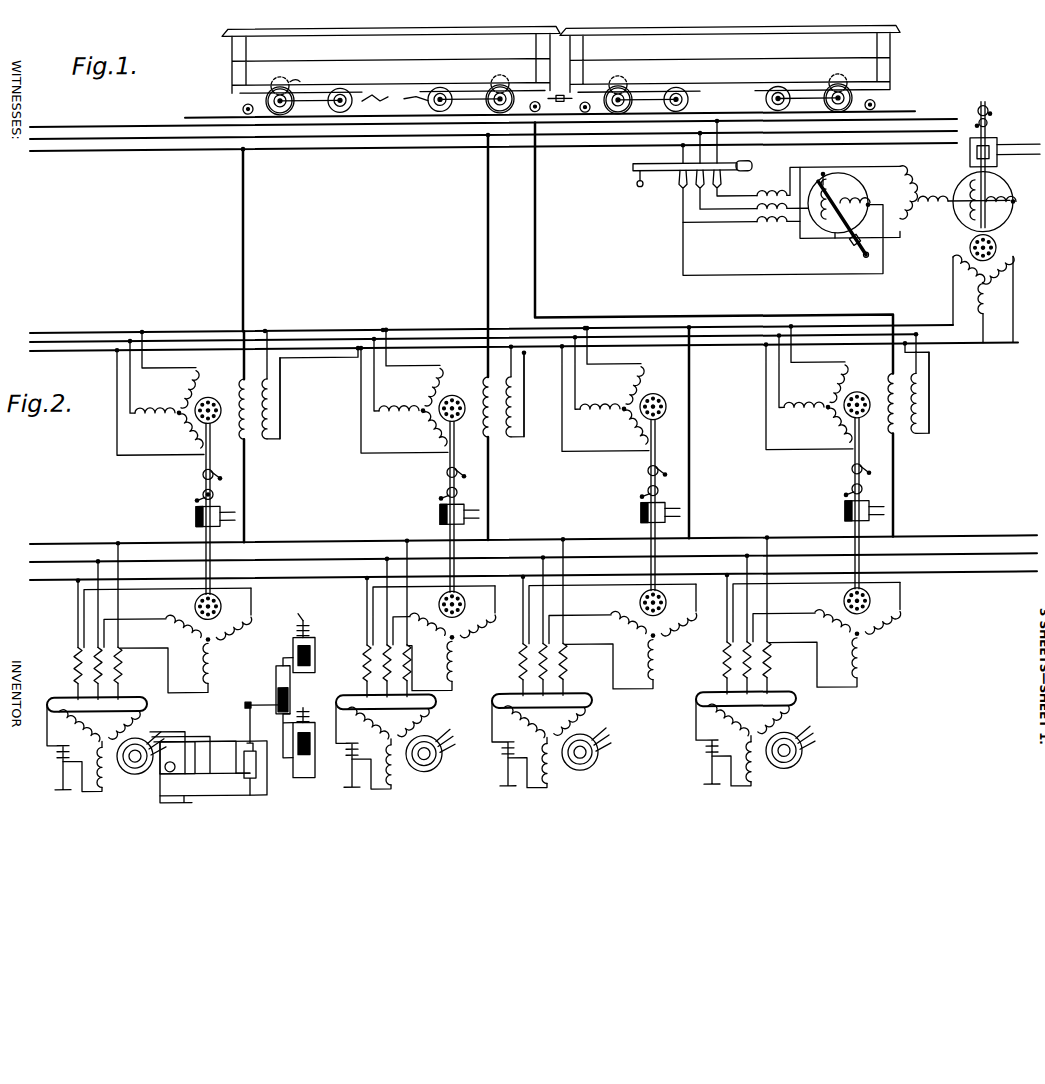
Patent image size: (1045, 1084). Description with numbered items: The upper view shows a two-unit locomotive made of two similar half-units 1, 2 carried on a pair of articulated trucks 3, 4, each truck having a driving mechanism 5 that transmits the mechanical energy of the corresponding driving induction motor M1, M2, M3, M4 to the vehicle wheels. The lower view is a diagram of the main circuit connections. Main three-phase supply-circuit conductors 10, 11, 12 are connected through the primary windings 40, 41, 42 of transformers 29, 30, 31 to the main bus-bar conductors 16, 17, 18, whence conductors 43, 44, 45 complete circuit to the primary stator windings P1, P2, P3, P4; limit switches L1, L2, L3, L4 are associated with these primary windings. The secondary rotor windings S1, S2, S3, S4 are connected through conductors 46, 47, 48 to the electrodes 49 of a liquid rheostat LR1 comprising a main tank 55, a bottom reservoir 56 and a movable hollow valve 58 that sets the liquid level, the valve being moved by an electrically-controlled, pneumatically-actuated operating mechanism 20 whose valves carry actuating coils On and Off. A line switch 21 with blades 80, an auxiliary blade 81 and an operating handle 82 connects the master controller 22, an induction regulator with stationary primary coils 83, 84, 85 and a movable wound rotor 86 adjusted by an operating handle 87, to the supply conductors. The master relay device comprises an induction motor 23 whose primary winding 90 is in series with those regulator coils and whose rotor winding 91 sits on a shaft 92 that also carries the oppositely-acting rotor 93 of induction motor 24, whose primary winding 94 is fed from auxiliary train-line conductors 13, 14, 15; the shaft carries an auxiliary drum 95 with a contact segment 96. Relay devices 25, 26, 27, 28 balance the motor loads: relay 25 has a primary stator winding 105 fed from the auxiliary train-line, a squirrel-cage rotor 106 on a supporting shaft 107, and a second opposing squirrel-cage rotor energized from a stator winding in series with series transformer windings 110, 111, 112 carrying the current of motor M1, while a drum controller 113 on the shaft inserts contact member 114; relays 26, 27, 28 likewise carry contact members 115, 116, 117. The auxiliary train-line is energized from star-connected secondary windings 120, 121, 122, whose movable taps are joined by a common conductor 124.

In FIG. 1, the half-unit 1 is at (391, 70).
In FIG. 1, the half-unit 2 is at (730, 68).
In FIG. 1, the articulated truck 3 is at (375, 105).
In FIG. 1, the articulated truck 4 is at (410, 104).
In FIG. 1, the driving mechanism 5 is at (300, 84).
In FIG. 1, the driving induction motor M1 is at (282, 79).
In FIG. 2, the driving induction motor M1 is at (96, 772).
In FIG. 1, the driving induction motor M2 is at (500, 79).
In FIG. 2, the driving induction motor M2 is at (385, 770).
In FIG. 1, the driving induction motor M3 is at (618, 81).
In FIG. 2, the driving induction motor M3 is at (541, 768).
In FIG. 1, the driving induction motor M4 is at (838, 81).
In FIG. 2, the driving induction motor M4 is at (745, 766).
In FIG. 2, the main three-phase supply-circuit conductor 10 is at (97, 128).
In FIG. 2, the main three-phase supply-circuit conductor 11 is at (124, 141).
In FIG. 2, the main three-phase supply-circuit conductor 12 is at (160, 151).
In FIG. 2, the auxiliary train-line conductor 13 is at (45, 333).
In FIG. 2, the auxiliary train-line conductor 14 is at (72, 342).
In FIG. 2, the auxiliary train-line conductor 15 is at (96, 351).
In FIG. 2, the main bus-bar conductor 16 is at (48, 544).
In FIG. 2, the main bus-bar conductor 17 is at (73, 562).
In FIG. 2, the main bus-bar conductor 18 is at (97, 580).
In FIG. 2, the operating mechanism 20 is at (296, 698).
In FIG. 2, the line switch 21 is at (648, 165).
In FIG. 2, the master controller 22 is at (860, 241).
In FIG. 2, the induction motor 23 is at (972, 190).
In FIG. 2, the induction motor 24 is at (925, 271).
In FIG. 2, the relay device 25 is at (189, 496).
In FIG. 2, the relay device 26 is at (435, 494).
In FIG. 2, the relay device 27 is at (636, 492).
In FIG. 2, the relay device 28 is at (840, 491).
In FIG. 2, the transformer 29 is at (263, 436).
In FIG. 2, the transformer 30 is at (503, 434).
In FIG. 2, the transformer 31 is at (909, 430).
In FIG. 2, the primary winding 40 is at (230, 396).
In FIG. 2, the primary winding 41 is at (474, 395).
In FIG. 2, the primary winding 42 is at (877, 391).
In FIG. 2, the conductor 43 is at (133, 594).
In FIG. 2, the conductor 44 is at (123, 603).
In FIG. 2, the conductor 45 is at (65, 613).
In FIG. 2, the conductor 46 is at (170, 733).
In FIG. 2, the conductor 47 is at (190, 738).
In FIG. 2, the conductor 48 is at (218, 743).
In FIG. 2, the electrode 49 is at (230, 780).
In FIG. 2, the main tank 55 is at (177, 758).
In FIG. 2, the bottom reservoir 56 is at (174, 785).
In FIG. 2, the movable hollow valve 58 is at (254, 754).
In FIG. 2, the blade 80 is at (681, 200).
In FIG. 2, the auxiliary switch blade 81 is at (633, 176).
In FIG. 2, the operating handle 82 is at (688, 176).
In FIG. 2, the stationary primary coil 83 is at (772, 198).
In FIG. 2, the stationary primary coil 84 is at (757, 212).
In FIG. 2, the stationary primary coil 85 is at (757, 226).
In FIG. 2, the movable wound rotor 86 is at (858, 200).
In FIG. 2, the operating handle 87 is at (860, 262).
In FIG. 2, the primary winding 90 is at (920, 200).
In FIG. 2, the rotor winding 91 is at (1004, 194).
In FIG. 2, the shaft 92 is at (1003, 228).
In FIG. 2, the rotor 93 is at (970, 252).
In FIG. 2, the primary winding 94 is at (980, 296).
In FIG. 2, the auxiliary drum 95 is at (1000, 150).
In FIG. 2, the contact segment 96 is at (970, 160).
In FIG. 2, the primary stator winding 105 is at (156, 396).
In FIG. 2, the squirrel-cage rotor 106 is at (207, 389).
In FIG. 2, the supporting shaft 107 is at (215, 434).
In FIG. 2, the series transformer winding 110 is at (58, 674).
In FIG. 2, the series transformer winding 111 is at (68, 668).
In FIG. 2, the series transformer winding 112 is at (134, 673).
In FIG. 2, the drum controller 113 is at (225, 487).
In FIG. 2, the contact member 114 is at (200, 520).
In FIG. 2, the auxiliary contact member 115 is at (444, 518).
In FIG. 2, the auxiliary contact member 116 is at (645, 516).
In FIG. 2, the auxiliary contact member 117 is at (849, 515).
In FIG. 2, the secondary winding 120 is at (296, 398).
In FIG. 2, the secondary winding 121 is at (947, 392).
In FIG. 2, the secondary winding 122 is at (540, 394).
In FIG. 2, the common conductor 124 is at (320, 364).
In FIG. 2, the primary stator winding P1 is at (97, 719).
In FIG. 2, the primary stator winding P2 is at (386, 716).
In FIG. 2, the primary stator winding P3 is at (542, 715).
In FIG. 2, the primary stator winding P4 is at (746, 713).
In FIG. 2, the secondary rotor winding S1 is at (141, 740).
In FIG. 2, the secondary rotor winding S2 is at (436, 737).
In FIG. 2, the secondary rotor winding S3 is at (592, 736).
In FIG. 2, the secondary rotor winding S4 is at (796, 734).
In FIG. 2, the limit switch L1 is at (50, 747).
In FIG. 2, the limit switch L2 is at (338, 744).
In FIG. 2, the limit switch L3 is at (494, 743).
In FIG. 2, the limit switch L4 is at (698, 742).
In FIG. 2, the liquid rheostat LR1 is at (267, 797).
In FIG. 2, the actuating coil Off is at (307, 630).
In FIG. 2, the actuating coil On is at (310, 728).